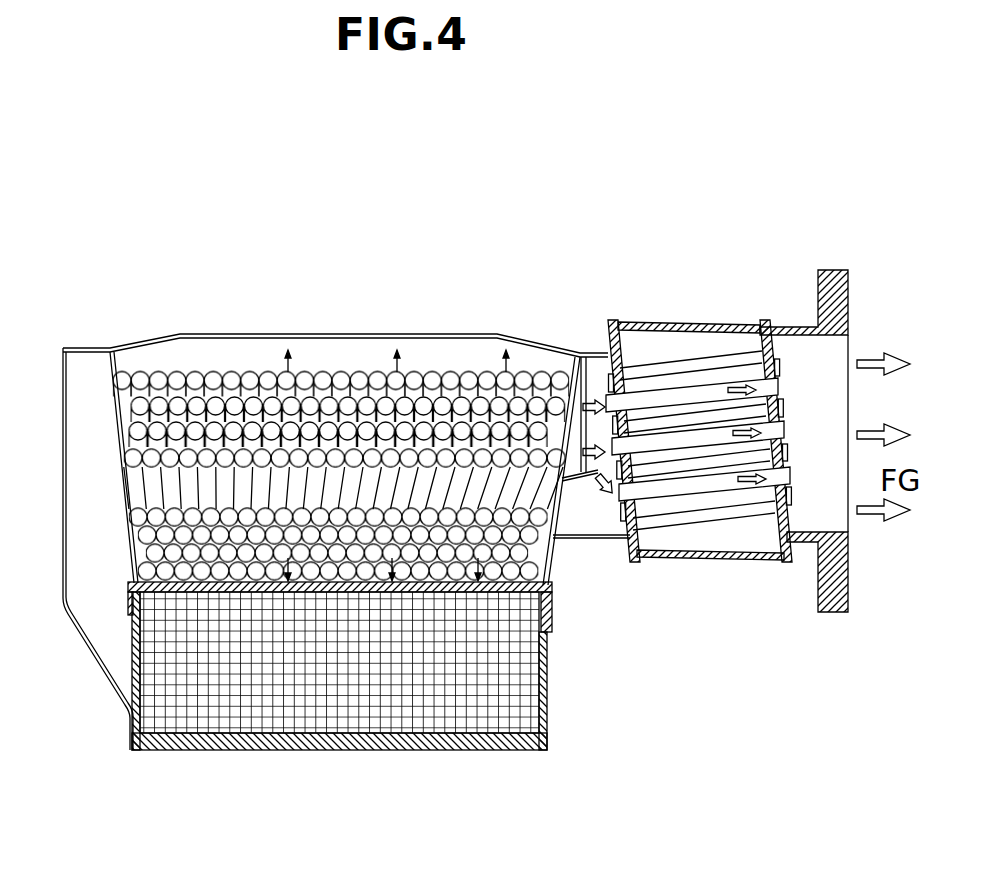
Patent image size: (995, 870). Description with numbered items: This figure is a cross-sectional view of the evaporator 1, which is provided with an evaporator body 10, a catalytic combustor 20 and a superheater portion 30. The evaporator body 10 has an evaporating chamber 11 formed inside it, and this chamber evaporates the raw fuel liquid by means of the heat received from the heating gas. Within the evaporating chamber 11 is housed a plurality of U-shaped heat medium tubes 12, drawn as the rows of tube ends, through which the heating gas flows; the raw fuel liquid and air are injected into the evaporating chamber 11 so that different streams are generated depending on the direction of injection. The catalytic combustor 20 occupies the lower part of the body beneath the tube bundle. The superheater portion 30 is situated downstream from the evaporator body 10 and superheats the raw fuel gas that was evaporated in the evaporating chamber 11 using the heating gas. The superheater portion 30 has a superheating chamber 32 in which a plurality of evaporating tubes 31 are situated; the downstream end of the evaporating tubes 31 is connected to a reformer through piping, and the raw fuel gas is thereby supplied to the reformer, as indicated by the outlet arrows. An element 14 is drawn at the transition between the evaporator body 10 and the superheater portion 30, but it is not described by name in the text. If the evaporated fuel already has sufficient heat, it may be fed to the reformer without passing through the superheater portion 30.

The evaporator 1 is at (447, 249).
The evaporator body 10 is at (316, 320).
The evaporating chamber 11 is at (213, 357).
The U-shaped heat medium tubes 12 is at (447, 359).
The exhaust gas outlet duct 14 is at (585, 352).
The catalytic combustor 20 is at (354, 726).
The superheater portion 30 is at (699, 425).
The evaporating tubes 31 is at (713, 393).
The superheating chamber 32 is at (715, 538).